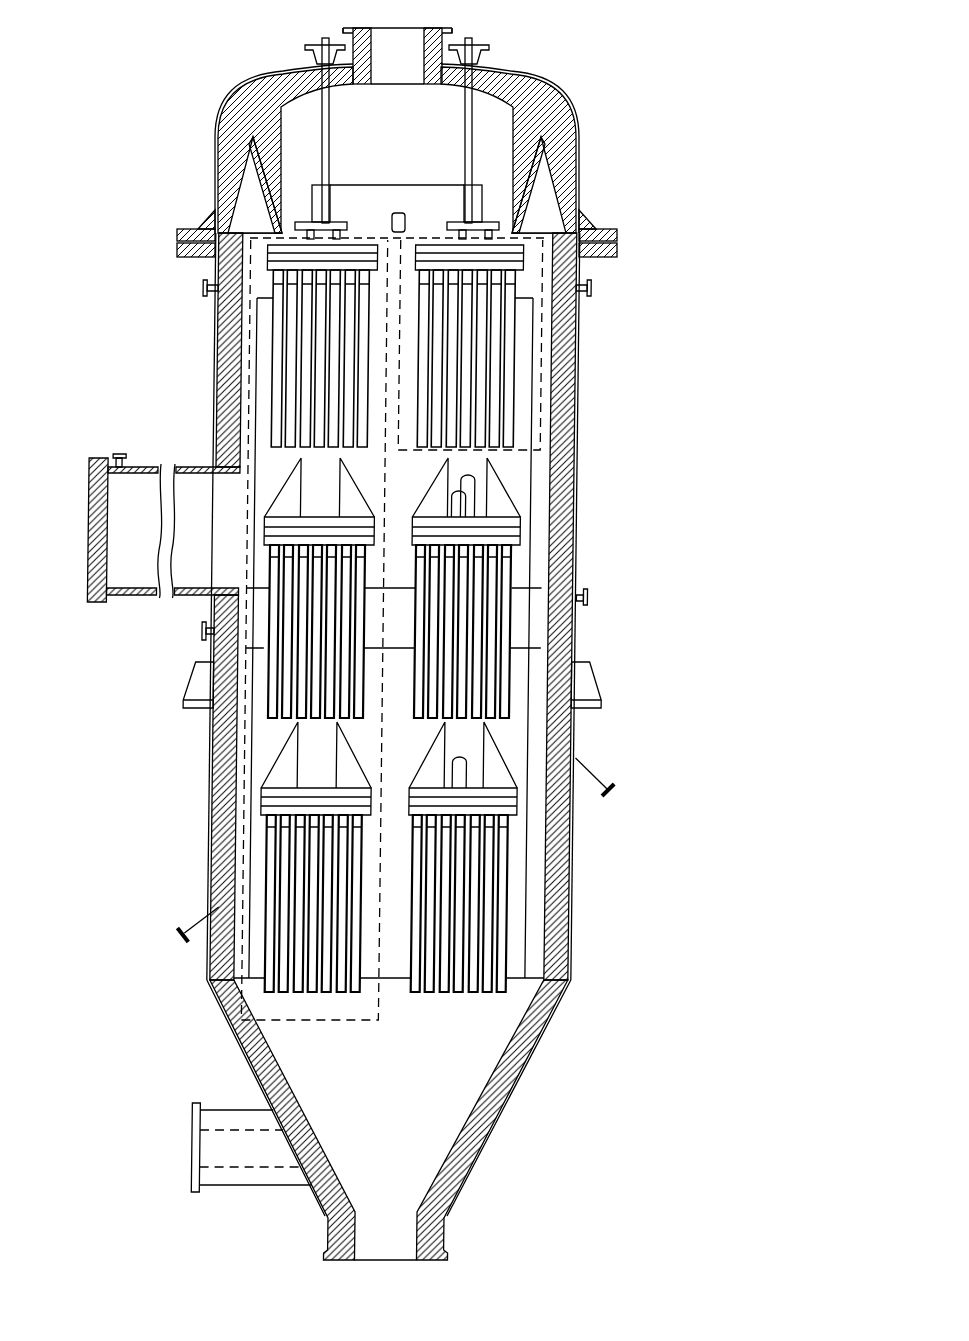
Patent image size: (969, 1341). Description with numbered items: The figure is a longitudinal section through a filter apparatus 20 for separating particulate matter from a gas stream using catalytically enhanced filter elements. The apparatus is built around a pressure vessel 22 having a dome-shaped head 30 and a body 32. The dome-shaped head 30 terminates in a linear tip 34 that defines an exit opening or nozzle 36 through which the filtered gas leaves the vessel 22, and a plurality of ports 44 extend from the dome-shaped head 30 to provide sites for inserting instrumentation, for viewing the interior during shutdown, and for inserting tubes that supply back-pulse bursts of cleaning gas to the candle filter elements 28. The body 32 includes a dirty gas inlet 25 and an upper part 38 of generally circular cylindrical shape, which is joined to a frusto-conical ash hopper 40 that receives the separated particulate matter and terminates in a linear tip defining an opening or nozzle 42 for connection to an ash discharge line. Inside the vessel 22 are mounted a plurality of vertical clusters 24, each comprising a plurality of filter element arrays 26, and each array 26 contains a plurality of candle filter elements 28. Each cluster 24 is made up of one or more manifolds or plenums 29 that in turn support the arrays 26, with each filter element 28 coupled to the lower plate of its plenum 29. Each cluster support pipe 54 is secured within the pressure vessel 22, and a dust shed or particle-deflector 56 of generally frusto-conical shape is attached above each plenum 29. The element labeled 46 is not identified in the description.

The filter apparatus 20 is at (375, 648).
The pressure vessel 22 is at (408, 764).
The clusters 24 is at (228, 387).
The dirty gas inlet 25 is at (92, 513).
The filter element arrays 26 is at (389, 618).
The candle filter elements 28 is at (284, 444).
The manifolds (plenums) 29 is at (273, 805).
The dome-shaped head 30 is at (568, 112).
The body 32 is at (588, 898).
The linear tip 34 is at (452, 28).
The exit opening or nozzle 36 is at (403, 34).
The upper part 38 is at (571, 500).
The frusto-conical ash hopper 40 is at (502, 1129).
The opening or nozzle 42 is at (399, 1252).
The ports 44 is at (308, 50).
The support rod 46 is at (308, 45).
The cluster support pipe 54 is at (316, 776).
The dust shed or particle-deflector 56 is at (496, 772).